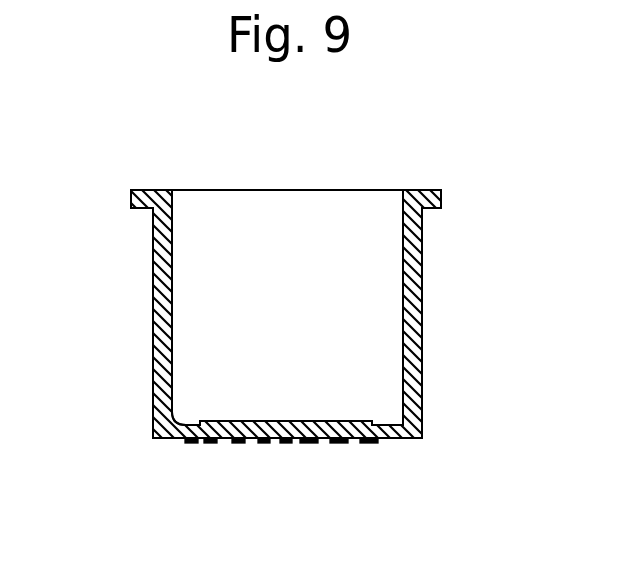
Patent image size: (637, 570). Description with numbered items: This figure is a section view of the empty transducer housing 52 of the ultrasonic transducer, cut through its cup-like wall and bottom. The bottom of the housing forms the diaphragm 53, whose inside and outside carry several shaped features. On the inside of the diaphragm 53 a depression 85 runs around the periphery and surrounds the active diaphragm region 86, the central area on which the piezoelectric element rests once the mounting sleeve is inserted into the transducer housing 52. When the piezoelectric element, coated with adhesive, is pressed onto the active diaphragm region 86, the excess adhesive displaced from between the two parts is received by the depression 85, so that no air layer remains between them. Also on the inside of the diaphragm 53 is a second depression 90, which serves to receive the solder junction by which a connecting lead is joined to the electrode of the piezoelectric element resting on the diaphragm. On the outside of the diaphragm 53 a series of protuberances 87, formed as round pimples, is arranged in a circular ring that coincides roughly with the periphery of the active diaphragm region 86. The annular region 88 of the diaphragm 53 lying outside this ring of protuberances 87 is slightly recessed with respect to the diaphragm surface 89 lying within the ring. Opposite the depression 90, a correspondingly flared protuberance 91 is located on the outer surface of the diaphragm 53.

The transducer housing 52 is at (153, 290).
The diaphragm 53 is at (268, 444).
The depression 85 is at (190, 424).
The active diaphragm region 86 is at (287, 420).
The protuberances 87 is at (238, 444).
The annular region 88 is at (408, 441).
The diaphragm surface 89 is at (305, 444).
The depression 90 is at (365, 420).
The flared protuberance 91 is at (371, 444).